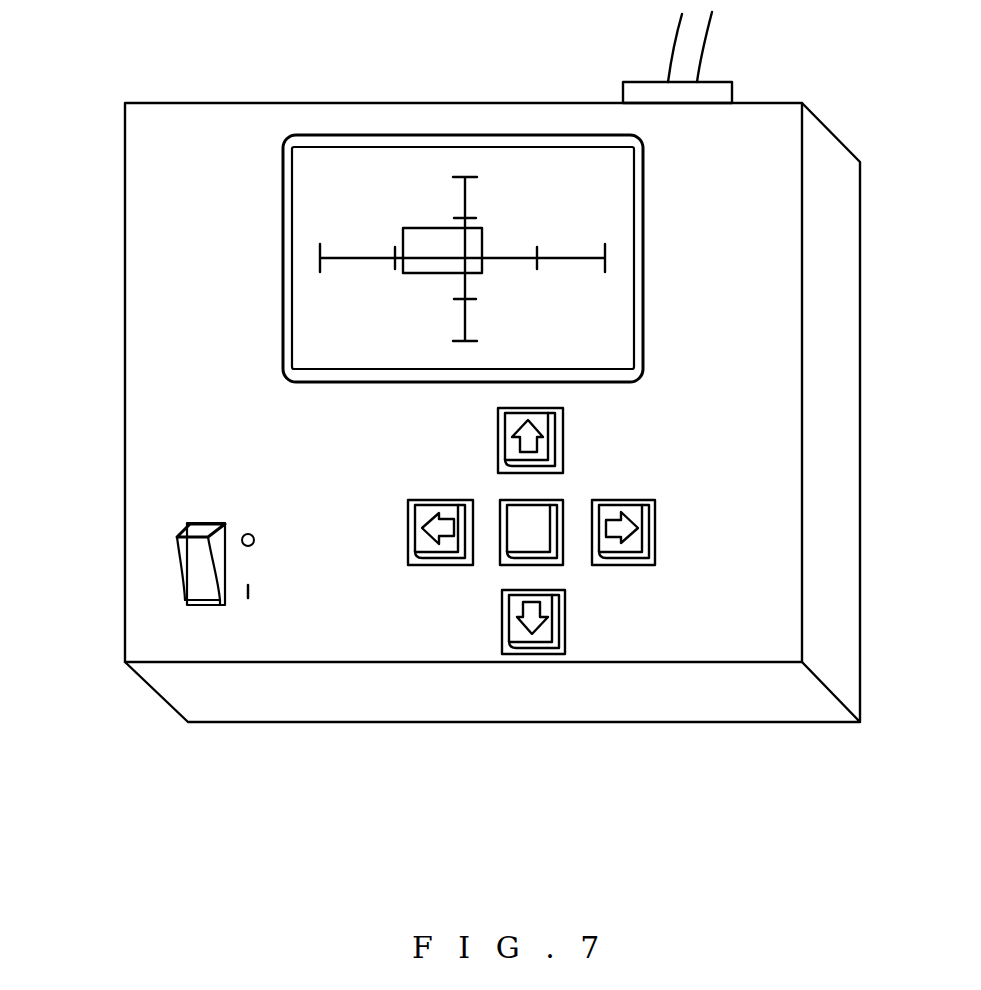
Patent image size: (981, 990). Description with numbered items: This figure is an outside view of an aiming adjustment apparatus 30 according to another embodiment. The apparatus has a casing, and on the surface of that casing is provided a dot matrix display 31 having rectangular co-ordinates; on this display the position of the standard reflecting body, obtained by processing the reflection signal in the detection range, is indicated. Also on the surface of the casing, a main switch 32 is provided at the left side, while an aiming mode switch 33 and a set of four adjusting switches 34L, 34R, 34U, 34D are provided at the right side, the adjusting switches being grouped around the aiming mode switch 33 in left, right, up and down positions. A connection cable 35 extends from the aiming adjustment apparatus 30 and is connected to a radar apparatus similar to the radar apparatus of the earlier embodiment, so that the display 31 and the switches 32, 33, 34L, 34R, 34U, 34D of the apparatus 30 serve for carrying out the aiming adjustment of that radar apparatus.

The aiming adjustment apparatus 30 is at (106, 248).
The dot matrix display 31 is at (510, 190).
The main switch 32 is at (188, 548).
The aiming mode switch 33 is at (517, 532).
The adjusting switch 34U is at (543, 442).
The adjusting switch 34L is at (407, 543).
The adjusting switch 34R is at (635, 533).
The adjusting switch 34D is at (546, 628).
The connection cable 35 is at (702, 50).